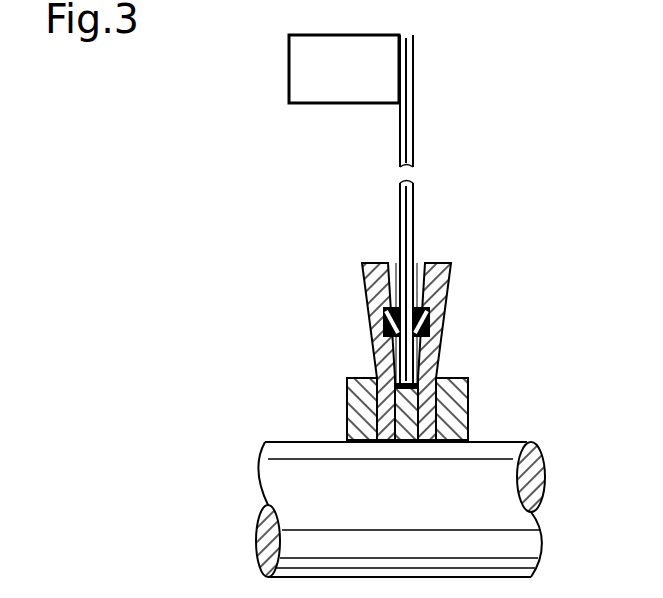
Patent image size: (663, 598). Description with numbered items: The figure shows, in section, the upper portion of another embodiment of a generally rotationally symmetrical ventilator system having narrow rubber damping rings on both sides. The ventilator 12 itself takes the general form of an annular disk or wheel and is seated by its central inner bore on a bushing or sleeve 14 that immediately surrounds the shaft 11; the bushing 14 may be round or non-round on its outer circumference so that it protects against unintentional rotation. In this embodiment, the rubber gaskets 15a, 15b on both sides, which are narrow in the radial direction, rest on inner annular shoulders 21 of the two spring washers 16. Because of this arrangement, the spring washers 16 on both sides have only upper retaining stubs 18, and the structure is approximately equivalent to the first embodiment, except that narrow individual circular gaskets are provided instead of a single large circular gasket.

The shaft 11 is at (492, 453).
The ventilator 12 is at (408, 208).
The bushing 14 is at (407, 412).
The rubber gasket 15a is at (383, 318).
The rubber gasket 15b is at (430, 320).
The spring washer 16 is at (448, 265).
The retaining stub 18 is at (387, 324).
The inner annular shoulder 21 is at (326, 311).